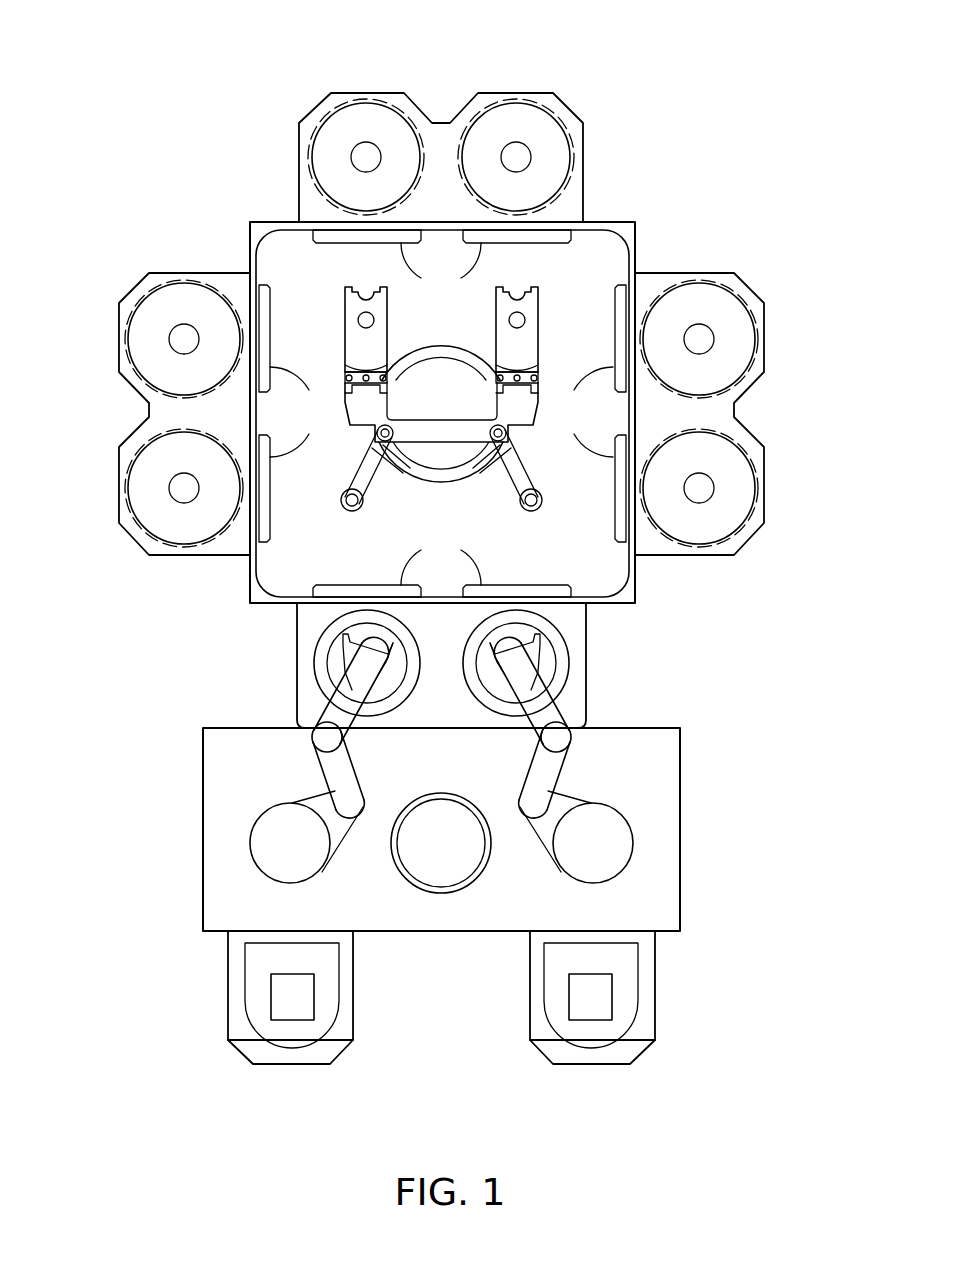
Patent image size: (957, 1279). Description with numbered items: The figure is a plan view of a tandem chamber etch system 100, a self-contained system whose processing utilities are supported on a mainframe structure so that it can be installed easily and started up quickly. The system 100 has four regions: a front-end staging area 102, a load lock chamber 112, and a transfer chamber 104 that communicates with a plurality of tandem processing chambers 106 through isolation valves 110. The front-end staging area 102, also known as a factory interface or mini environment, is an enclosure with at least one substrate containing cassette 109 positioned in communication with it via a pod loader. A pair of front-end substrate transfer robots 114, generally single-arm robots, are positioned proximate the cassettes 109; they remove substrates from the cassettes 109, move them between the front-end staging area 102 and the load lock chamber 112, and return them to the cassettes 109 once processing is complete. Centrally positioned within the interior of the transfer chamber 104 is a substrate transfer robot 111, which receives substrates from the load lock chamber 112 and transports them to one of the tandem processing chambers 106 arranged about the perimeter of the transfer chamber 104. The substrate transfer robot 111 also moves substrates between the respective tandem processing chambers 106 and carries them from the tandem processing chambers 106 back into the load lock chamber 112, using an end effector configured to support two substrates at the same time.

The tandem chamber etch system 100 is at (710, 105).
The front-end staging area 102 is at (203, 776).
The transfer chamber 104 is at (260, 222).
The tandem processing chambers 106 is at (498, 93).
The substrate containing cassette 109 is at (228, 1002).
The isolation valves 110 is at (441, 414).
The substrate transfer robot 111 is at (430, 432).
The load lock chamber 112 is at (297, 667).
The front-end substrate transfer robots 114 is at (290, 867).